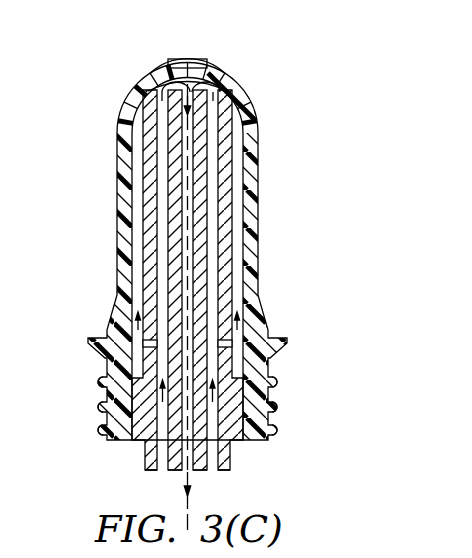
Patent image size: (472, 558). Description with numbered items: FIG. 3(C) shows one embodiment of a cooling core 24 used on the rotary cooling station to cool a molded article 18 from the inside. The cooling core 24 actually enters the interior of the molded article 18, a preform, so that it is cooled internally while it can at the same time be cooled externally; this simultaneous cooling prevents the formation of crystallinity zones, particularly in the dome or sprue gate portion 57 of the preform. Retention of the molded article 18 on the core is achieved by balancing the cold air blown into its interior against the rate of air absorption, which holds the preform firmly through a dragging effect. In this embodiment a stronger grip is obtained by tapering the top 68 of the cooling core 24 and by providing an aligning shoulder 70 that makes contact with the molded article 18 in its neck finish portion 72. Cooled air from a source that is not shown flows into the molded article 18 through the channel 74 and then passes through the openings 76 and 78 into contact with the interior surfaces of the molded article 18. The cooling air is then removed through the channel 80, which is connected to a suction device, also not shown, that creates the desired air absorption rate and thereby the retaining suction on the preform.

The molded article 18 is at (125, 198).
The cooling core 24 is at (227, 213).
The dome or sprue gate portion 57 is at (198, 60).
The top of the cooling core 68 is at (215, 86).
The aligning shoulder 70 is at (108, 424).
The neck finish portion 72 is at (272, 425).
The channel 74 is at (162, 460).
The openings 76 is at (153, 163).
The openings 78 is at (166, 82).
The channel 80 is at (192, 243).